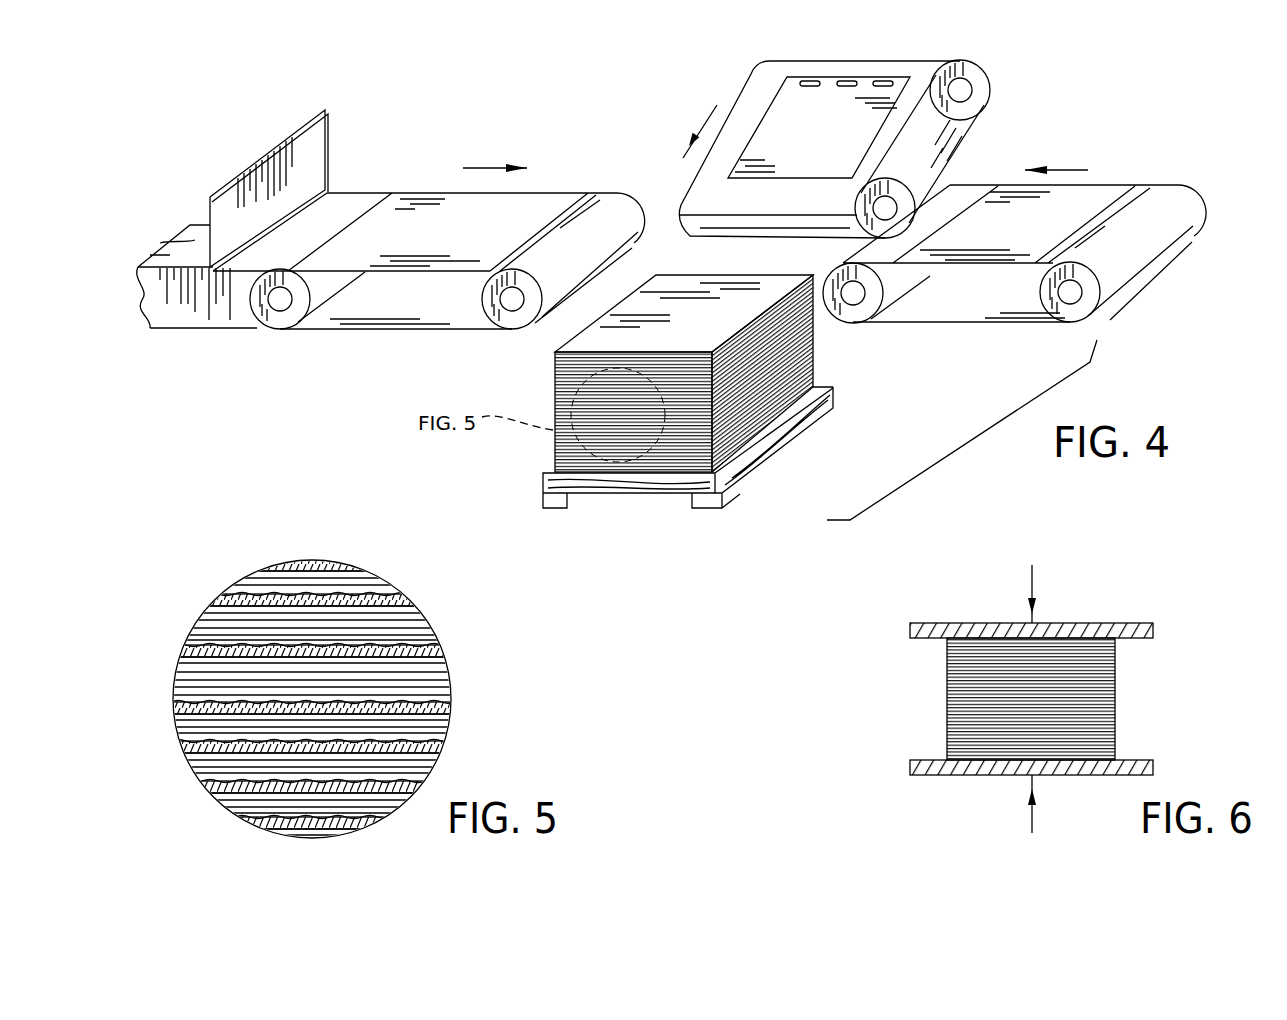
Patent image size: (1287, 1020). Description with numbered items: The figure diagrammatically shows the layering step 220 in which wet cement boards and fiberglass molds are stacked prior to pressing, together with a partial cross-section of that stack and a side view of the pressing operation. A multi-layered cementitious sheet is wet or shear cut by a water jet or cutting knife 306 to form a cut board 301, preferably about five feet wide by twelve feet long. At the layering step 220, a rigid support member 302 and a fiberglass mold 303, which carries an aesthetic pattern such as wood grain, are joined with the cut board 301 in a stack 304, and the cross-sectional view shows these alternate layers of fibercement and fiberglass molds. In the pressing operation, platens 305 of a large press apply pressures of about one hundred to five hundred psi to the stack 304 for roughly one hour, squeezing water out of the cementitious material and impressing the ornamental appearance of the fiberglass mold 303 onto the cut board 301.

In FIG. 4, the layering step 220 is at (592, 163).
In FIG. 4, the cut board 301 is at (402, 235).
In FIG. 5, the cut board 301 is at (463, 663).
In FIG. 4, the rigid support member 302 is at (795, 108).
In FIG. 5, the rigid support member 302 is at (450, 655).
In FIG. 4, the fiberglass mold 303 is at (1082, 212).
In FIG. 5, the fiberglass mold 303 is at (450, 707).
In FIG. 4, the stack 304 is at (817, 350).
In FIG. 6, the stack 304 is at (1115, 692).
In FIG. 6, the platens 305 is at (1153, 628).
In FIG. 4, the cutting knife 306 is at (300, 157).